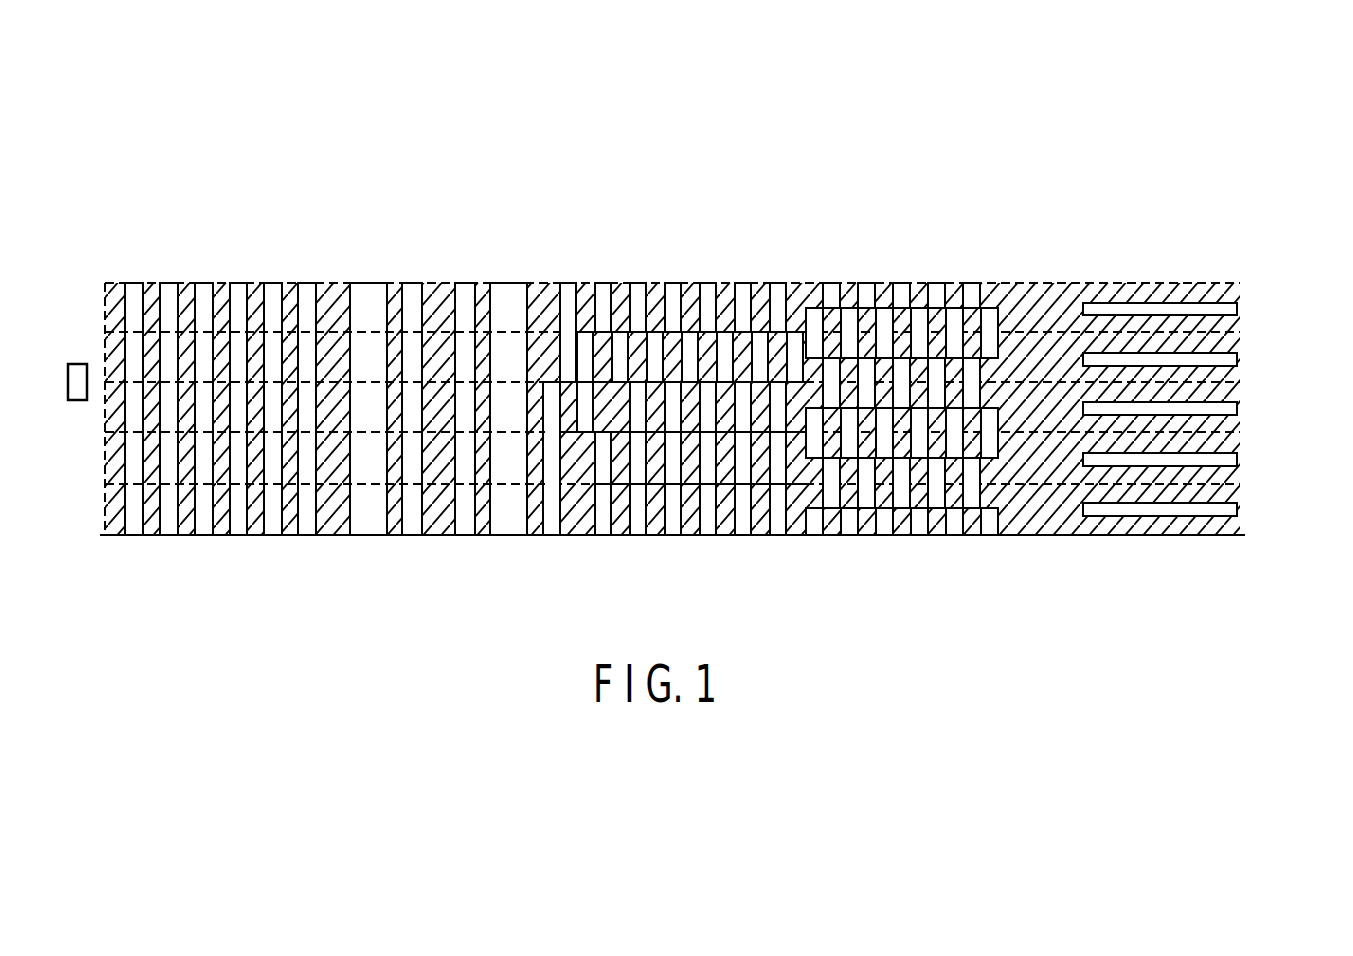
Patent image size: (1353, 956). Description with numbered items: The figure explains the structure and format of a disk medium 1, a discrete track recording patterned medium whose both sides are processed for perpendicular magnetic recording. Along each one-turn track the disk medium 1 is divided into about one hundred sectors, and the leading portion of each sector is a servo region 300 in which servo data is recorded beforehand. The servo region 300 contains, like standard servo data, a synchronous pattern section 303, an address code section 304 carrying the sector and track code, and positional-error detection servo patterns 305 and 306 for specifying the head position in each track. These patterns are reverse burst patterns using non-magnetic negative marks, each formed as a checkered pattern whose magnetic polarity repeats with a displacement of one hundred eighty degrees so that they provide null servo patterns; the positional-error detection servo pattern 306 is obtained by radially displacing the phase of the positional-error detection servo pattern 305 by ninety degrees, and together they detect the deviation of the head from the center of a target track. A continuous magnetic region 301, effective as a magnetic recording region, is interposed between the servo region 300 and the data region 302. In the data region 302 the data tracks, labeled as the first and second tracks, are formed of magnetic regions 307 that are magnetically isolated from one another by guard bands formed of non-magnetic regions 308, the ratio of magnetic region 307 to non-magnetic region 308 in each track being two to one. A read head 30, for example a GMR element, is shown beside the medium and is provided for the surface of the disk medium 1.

The disk medium 1 is at (1205, 158).
The read head 30 is at (77, 402).
The servo region 300 is at (124, 283).
The continuous magnetic region 301 is at (1082, 283).
The data region 302 is at (1237, 535).
The synchronous pattern section 303 is at (329, 283).
The address code section 304 is at (610, 283).
The positional-error detection servo pattern 305 is at (806, 283).
The positional-error detection servo pattern 306 is at (997, 188).
The magnetic region 307 is at (1238, 345).
The non-magnetic region 308 is at (1233, 306).